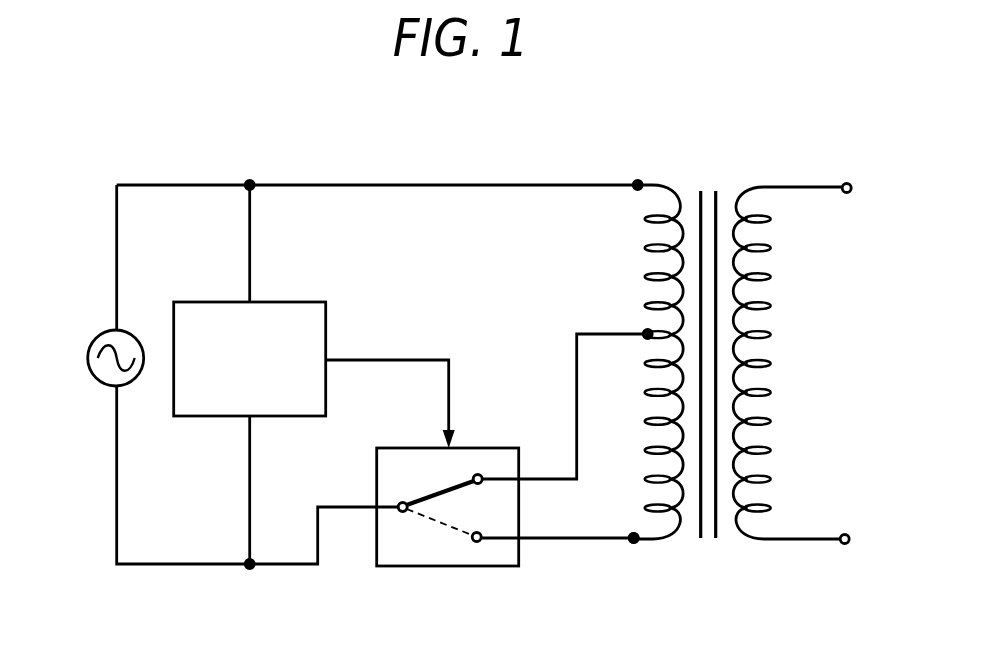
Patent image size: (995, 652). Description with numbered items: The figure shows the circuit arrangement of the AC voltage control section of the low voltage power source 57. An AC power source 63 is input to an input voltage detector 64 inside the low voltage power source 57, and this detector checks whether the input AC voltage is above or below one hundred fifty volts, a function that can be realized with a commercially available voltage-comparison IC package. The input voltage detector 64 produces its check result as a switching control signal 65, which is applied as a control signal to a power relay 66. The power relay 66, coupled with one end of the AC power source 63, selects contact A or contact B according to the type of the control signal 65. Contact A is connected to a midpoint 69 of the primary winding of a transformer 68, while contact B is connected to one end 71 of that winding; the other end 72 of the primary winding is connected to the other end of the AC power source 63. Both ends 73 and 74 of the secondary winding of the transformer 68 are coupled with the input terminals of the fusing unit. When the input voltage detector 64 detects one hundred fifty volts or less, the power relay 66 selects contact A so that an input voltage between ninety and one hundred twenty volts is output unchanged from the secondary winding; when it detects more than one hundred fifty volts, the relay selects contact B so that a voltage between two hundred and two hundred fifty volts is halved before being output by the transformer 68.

The low voltage power source 57 is at (360, 152).
The AC power source 63 is at (93, 341).
The input voltage detector 64 is at (297, 301).
The switching control signal 65 is at (373, 359).
The power relay 66 is at (484, 447).
The transformer 68 is at (706, 190).
The midpoint of the primary winding 69 is at (647, 333).
The one end of the winding 71 is at (633, 541).
The other end of the primary winding 72 is at (637, 184).
The end of the secondary winding 73 is at (844, 533).
The end of the secondary winding 74 is at (846, 182).